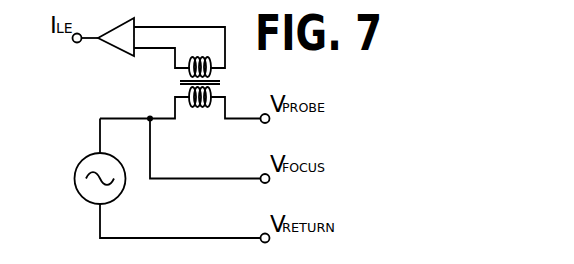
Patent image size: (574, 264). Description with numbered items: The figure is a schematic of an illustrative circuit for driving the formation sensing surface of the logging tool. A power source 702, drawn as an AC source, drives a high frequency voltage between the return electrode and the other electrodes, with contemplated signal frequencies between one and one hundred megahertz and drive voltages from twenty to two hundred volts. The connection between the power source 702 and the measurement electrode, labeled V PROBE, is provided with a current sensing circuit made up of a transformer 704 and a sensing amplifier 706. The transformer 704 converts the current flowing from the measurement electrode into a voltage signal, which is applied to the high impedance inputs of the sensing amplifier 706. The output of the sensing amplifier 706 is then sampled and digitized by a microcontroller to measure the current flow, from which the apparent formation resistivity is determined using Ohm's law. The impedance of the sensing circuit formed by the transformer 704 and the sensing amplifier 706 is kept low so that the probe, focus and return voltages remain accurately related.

The power source 702 is at (75, 188).
The transformer 704 is at (200, 108).
The sensing amplifier 706 is at (114, 48).